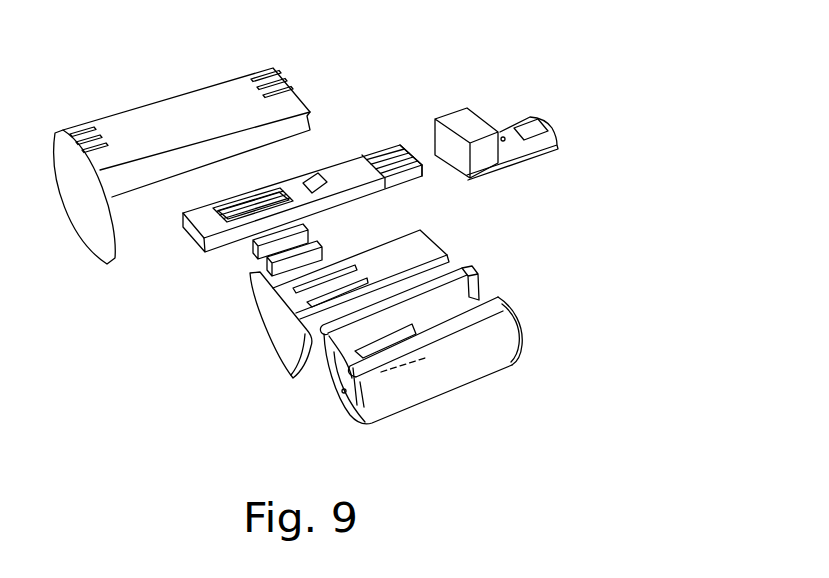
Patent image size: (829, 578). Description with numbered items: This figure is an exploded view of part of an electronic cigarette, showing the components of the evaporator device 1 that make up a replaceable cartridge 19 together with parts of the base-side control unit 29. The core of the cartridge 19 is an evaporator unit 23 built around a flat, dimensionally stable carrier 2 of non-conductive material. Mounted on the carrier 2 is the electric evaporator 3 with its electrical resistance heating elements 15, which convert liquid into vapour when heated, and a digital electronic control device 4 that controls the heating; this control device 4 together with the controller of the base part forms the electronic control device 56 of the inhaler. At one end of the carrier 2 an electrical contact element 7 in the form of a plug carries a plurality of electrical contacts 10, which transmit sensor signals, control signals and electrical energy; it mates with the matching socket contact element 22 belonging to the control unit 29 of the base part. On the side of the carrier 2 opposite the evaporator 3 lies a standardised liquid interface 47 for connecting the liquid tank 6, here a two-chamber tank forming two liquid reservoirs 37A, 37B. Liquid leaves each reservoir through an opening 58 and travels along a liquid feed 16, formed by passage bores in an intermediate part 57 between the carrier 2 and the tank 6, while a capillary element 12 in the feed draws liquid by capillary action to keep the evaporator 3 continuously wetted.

The evaporator device 1 is at (253, 385).
The cartridge 19 is at (332, 301).
The carrier 2 is at (370, 196).
The evaporator 3 is at (217, 225).
The electronic control device 4 is at (313, 177).
The electronic control device of the inhaler 56 is at (342, 134).
The liquid tank 6 is at (435, 364).
The electrical contact element 7 is at (398, 146).
The electrical contacts 10 is at (420, 174).
The capillary element 12 is at (312, 223).
The electrical resistance heating elements 15 is at (248, 206).
The liquid feed 16 is at (307, 283).
The electrical contact element 22 is at (447, 114).
The evaporator unit 23 is at (167, 97).
The control unit 29 is at (562, 154).
The liquid reservoir 37A is at (458, 308).
The liquid reservoir 37B is at (465, 372).
The liquid interface 47 is at (332, 293).
The intermediate part 57 is at (437, 248).
The opening 58 is at (352, 375).